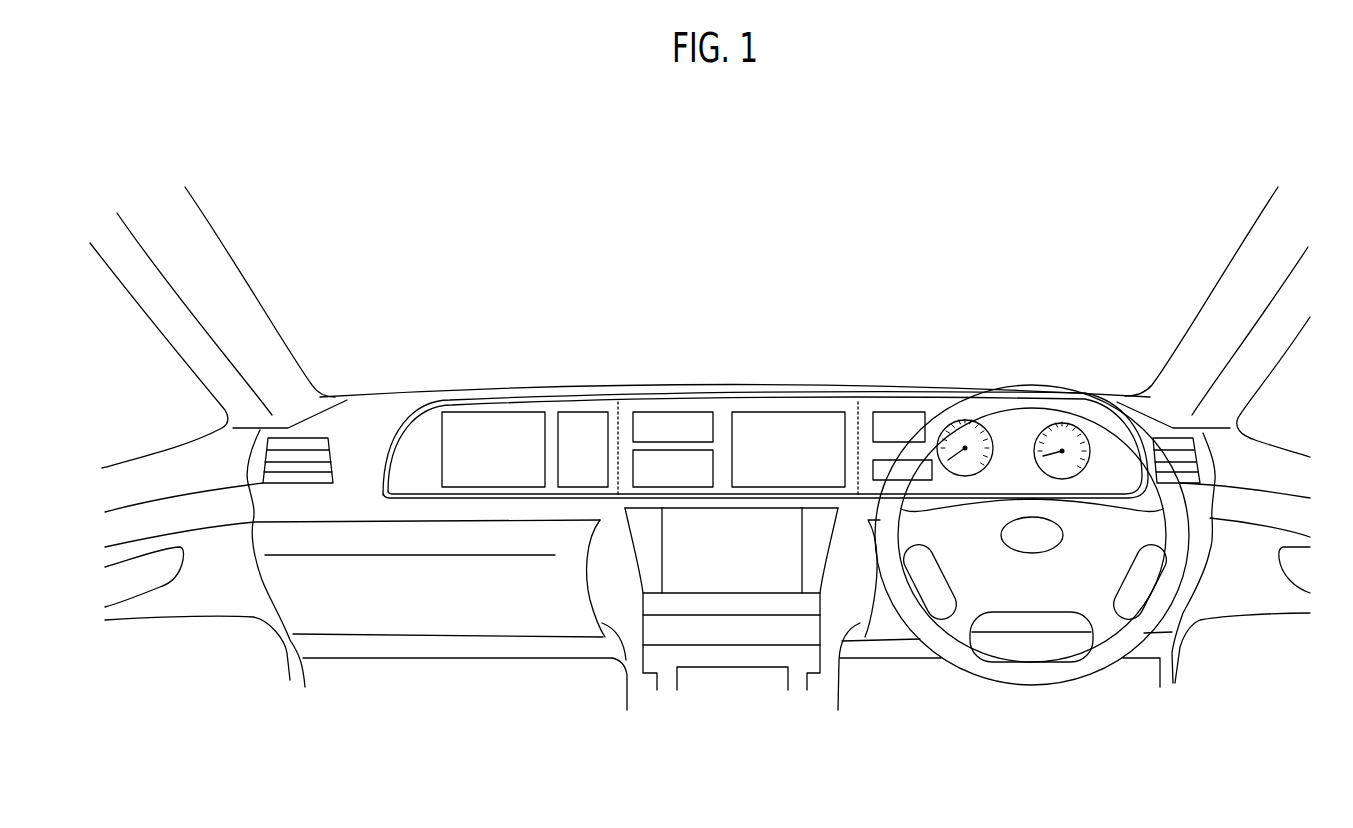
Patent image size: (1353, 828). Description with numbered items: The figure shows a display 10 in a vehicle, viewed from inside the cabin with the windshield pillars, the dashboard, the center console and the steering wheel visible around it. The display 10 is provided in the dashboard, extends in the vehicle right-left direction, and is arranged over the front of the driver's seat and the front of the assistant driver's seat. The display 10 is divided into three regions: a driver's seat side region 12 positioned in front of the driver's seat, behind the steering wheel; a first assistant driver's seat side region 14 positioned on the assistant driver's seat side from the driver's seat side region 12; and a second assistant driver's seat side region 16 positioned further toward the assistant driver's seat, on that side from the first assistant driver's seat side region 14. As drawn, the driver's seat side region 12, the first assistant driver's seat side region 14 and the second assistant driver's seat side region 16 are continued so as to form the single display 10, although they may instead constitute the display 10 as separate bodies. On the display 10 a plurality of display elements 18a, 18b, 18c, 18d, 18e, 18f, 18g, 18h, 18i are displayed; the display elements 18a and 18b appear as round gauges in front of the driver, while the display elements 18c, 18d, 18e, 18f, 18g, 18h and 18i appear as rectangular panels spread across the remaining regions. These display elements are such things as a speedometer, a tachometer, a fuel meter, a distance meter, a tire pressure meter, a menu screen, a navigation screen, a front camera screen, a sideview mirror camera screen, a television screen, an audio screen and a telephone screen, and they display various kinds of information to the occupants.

The display 10 is at (681, 381).
The driver's seat side region 12 is at (1023, 412).
The first assistant driver's seat side region 14 is at (772, 410).
The second assistant driver's seat side region 16 is at (532, 405).
The display element 18a is at (1066, 423).
The display element 18b is at (1020, 435).
The display element 18c is at (888, 460).
The display element 18d is at (882, 412).
The display element 18e is at (815, 410).
The display element 18f is at (643, 410).
The display element 18g is at (693, 449).
The display element 18h is at (583, 410).
The display element 18i is at (483, 410).